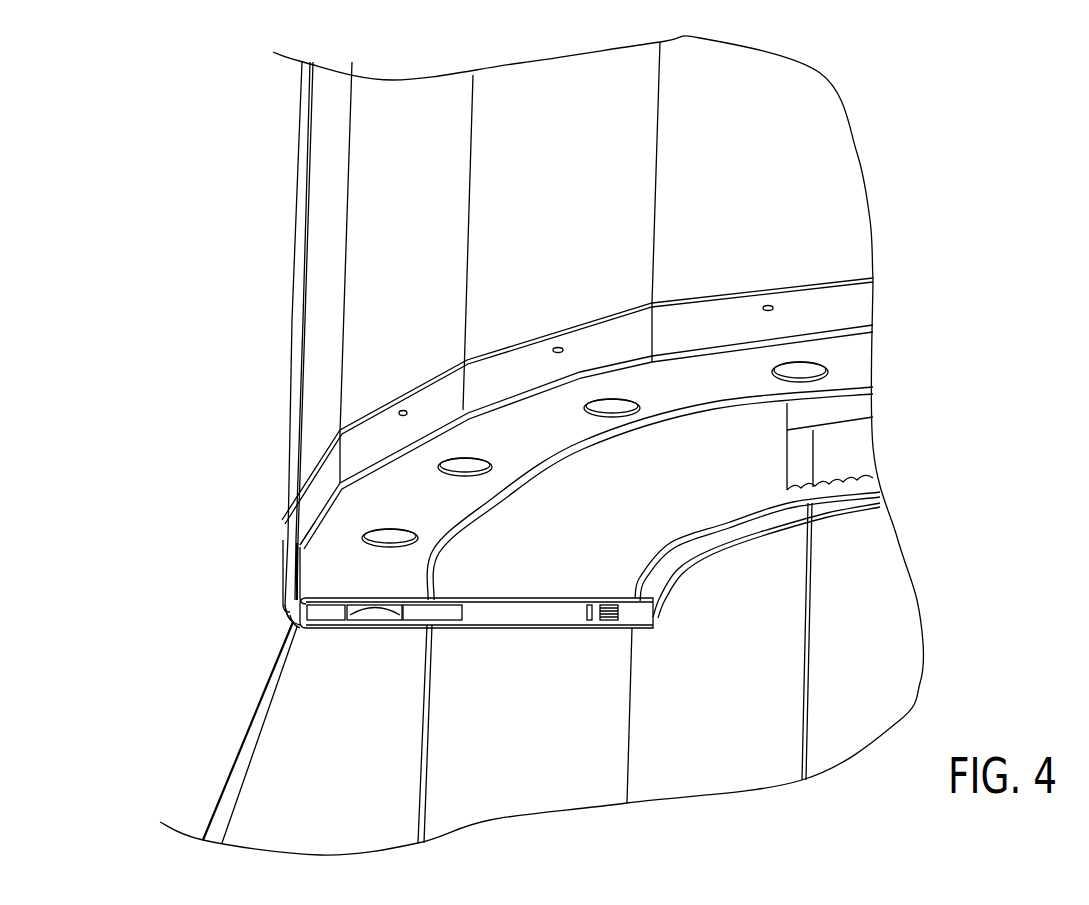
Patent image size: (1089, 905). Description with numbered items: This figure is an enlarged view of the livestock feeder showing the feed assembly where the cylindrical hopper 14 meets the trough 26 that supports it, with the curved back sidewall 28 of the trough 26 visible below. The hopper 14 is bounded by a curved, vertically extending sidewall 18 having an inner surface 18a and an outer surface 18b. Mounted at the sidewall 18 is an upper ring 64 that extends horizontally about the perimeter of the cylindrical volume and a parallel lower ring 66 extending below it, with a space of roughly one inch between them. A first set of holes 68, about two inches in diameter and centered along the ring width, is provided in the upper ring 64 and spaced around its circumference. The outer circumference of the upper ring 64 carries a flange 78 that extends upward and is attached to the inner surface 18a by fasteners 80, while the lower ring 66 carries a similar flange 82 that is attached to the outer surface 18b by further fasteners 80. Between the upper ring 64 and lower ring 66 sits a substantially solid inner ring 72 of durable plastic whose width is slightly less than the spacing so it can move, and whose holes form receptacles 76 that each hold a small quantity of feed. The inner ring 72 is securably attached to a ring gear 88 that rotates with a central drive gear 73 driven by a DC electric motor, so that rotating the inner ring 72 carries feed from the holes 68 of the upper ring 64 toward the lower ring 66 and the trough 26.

The cylindrical hopper 14 is at (283, 153).
The sidewall 18 is at (295, 383).
The inner surface 18a is at (340, 402).
The outer surface 18b is at (298, 238).
The trough 26 is at (215, 773).
The back sidewall 28 is at (427, 740).
The upper ring 64 is at (325, 578).
The lower ring 66 is at (292, 628).
The first set of holes 68 is at (393, 535).
The inner ring 72 is at (328, 615).
The central drive gear 73 is at (660, 572).
The receptacles 76 is at (388, 610).
The flange 78 is at (383, 430).
The fasteners 80 is at (405, 413).
The flange 82 is at (285, 572).
The ring gear 88 is at (548, 628).